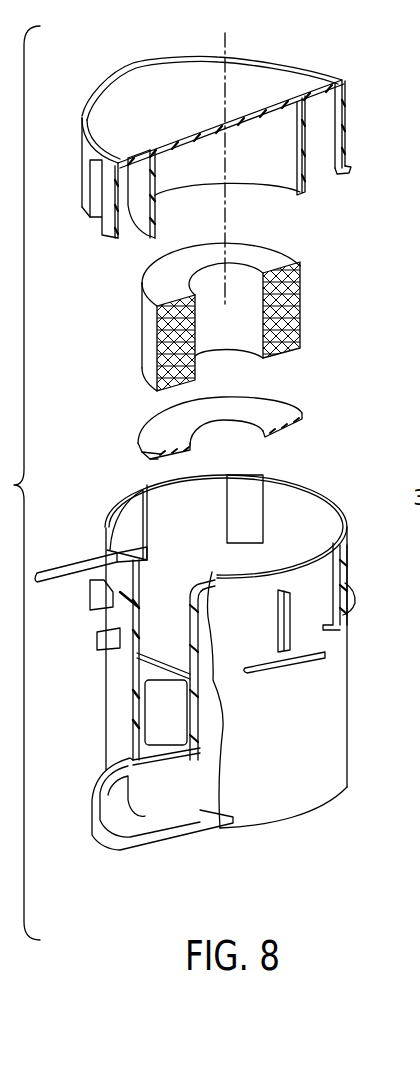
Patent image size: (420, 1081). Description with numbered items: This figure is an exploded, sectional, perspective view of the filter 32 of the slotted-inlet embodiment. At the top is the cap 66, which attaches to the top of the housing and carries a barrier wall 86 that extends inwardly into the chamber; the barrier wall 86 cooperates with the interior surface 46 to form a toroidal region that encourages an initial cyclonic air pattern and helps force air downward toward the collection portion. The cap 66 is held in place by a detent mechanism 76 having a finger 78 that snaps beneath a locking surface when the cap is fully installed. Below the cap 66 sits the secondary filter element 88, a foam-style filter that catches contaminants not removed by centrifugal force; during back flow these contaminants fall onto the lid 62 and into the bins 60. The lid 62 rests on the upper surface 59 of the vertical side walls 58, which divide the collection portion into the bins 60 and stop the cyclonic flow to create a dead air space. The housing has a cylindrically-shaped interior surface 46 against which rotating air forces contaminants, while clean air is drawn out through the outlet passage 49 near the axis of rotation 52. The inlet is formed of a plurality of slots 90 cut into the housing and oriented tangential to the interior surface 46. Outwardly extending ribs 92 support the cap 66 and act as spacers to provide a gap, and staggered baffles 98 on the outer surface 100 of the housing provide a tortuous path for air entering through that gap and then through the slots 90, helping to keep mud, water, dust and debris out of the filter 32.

The filter 32 is at (283, 845).
The interior surface 46 is at (323, 512).
The outlet passage 49 is at (190, 603).
The axis of rotation 52 is at (214, 43).
The vertical side walls 58 is at (152, 677).
The upper surface 59 is at (172, 668).
The bins 60 is at (175, 719).
The lid 62 is at (173, 444).
The cap 66 is at (183, 109).
The detent mechanism 76 is at (356, 173).
The finger 78 is at (344, 164).
The barrier wall 86 is at (307, 182).
The secondary filter element 88 is at (262, 260).
The slots 90 is at (133, 512).
The ribs 92 is at (279, 622).
The baffles 98 is at (100, 638).
The outer surface 100 is at (120, 722).